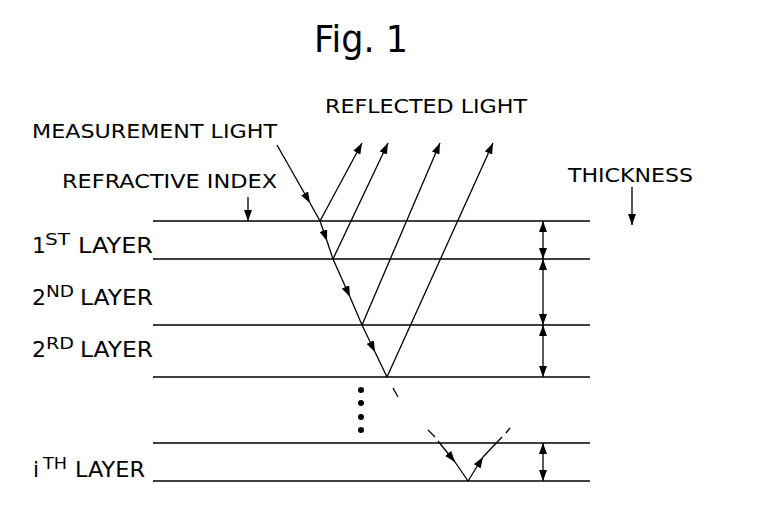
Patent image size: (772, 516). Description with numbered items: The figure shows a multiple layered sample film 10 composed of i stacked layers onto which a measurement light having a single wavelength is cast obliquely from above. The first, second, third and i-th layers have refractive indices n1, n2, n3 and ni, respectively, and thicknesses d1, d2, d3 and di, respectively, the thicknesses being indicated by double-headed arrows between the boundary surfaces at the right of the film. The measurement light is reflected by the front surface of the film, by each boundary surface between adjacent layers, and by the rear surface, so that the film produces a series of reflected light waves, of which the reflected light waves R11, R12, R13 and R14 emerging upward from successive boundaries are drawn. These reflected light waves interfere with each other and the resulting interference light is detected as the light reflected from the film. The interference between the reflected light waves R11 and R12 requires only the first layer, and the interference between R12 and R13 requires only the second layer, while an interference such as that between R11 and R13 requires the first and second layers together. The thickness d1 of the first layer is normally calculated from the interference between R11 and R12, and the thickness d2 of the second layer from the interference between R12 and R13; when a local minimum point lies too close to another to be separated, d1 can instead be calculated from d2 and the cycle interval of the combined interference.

The multiple layered sample film 10 is at (675, 223).
The reflected light wave from the front surface R11 is at (345, 172).
The reflected light wave from the first/second layer boundary R12 is at (374, 191).
The reflected light wave from the second/third layer boundary R13 is at (417, 224).
The reflected light wave from the third layer rear boundary R14 is at (457, 250).
The refractive index of the first layer n1 is at (371, 240).
The refractive index of the second layer n2 is at (371, 304).
The refractive index of the third layer n3 is at (371, 358).
The refractive index of the i-th layer ni is at (371, 462).
The thickness of the first layer d1 is at (593, 240).
The thickness of the second layer d2 is at (593, 292).
The thickness of the third layer d3 is at (593, 351).
The thickness of the i-th layer di is at (591, 462).